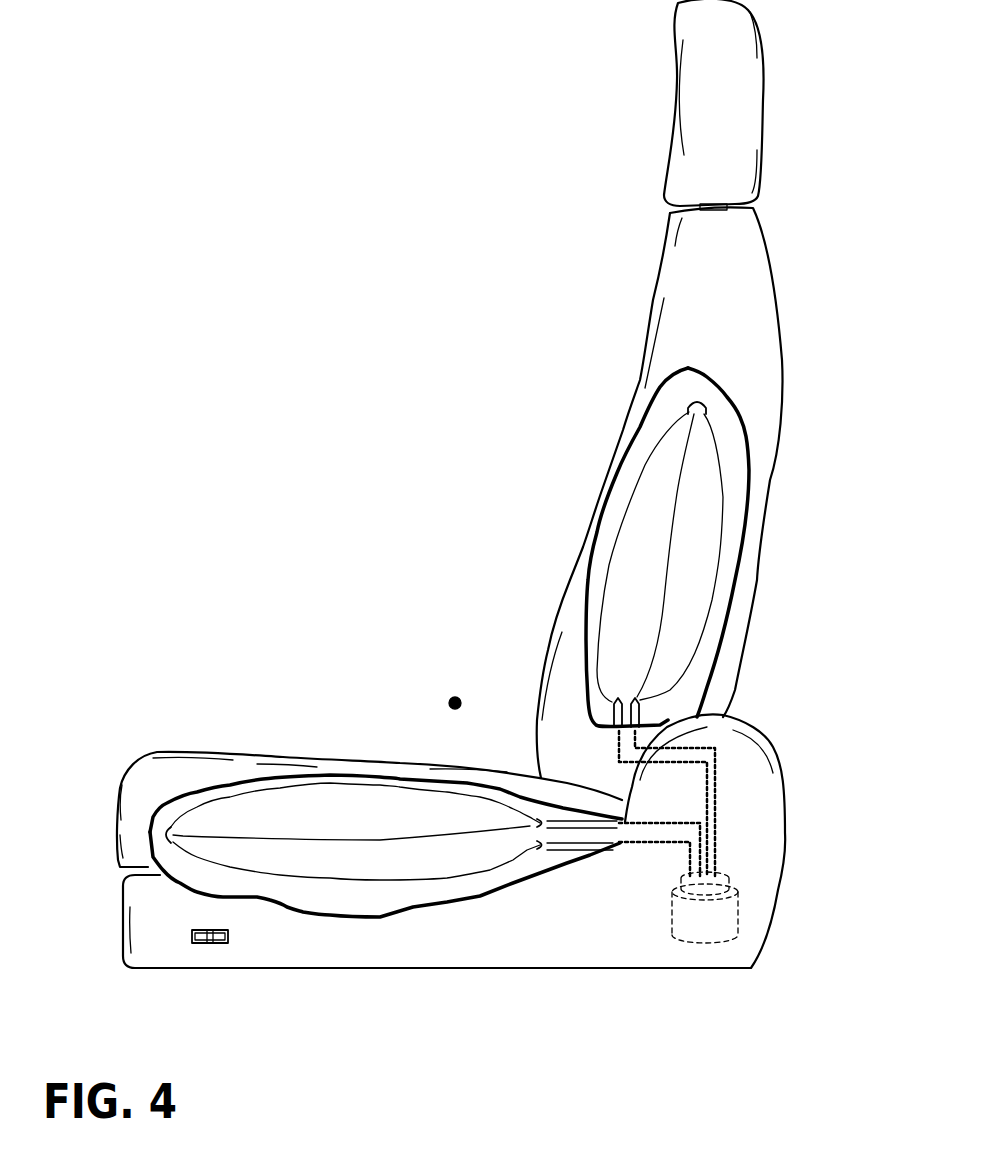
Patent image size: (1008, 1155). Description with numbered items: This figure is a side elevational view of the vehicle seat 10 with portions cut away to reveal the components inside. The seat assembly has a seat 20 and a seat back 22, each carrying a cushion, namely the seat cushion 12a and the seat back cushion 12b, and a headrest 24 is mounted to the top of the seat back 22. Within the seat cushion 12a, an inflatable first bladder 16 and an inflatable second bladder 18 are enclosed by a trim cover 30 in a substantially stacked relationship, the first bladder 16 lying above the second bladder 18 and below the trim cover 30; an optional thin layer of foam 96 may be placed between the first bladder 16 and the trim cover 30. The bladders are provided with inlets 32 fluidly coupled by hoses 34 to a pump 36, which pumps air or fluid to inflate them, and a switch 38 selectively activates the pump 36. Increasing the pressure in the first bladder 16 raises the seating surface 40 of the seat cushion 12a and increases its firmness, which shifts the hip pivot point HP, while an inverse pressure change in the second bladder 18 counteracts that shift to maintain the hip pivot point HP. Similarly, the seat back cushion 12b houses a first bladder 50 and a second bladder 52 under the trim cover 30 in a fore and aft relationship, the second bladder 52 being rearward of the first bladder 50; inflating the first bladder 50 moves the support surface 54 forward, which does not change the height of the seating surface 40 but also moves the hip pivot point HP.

The vehicle seat 10 is at (367, 119).
The seat cushion 12a is at (157, 752).
The seat back cushion 12b is at (547, 650).
The first bladder 16 is at (297, 800).
The second bladder 18 is at (377, 860).
The seat 20 is at (104, 877).
The seat back 22 is at (777, 295).
The headrest 24 is at (763, 97).
The trim cover 30 is at (753, 470).
The inlets 32 is at (642, 690).
The hoses 34 is at (703, 400).
The pump 36 is at (708, 917).
The switch 38 is at (210, 944).
The seating surface 40 is at (343, 763).
The first bladder 50 is at (657, 493).
The second bladder 52 is at (700, 570).
The support surface 54 is at (573, 567).
The thin layer of foam 96 is at (602, 537).
The hip pivot point HP is at (455, 697).